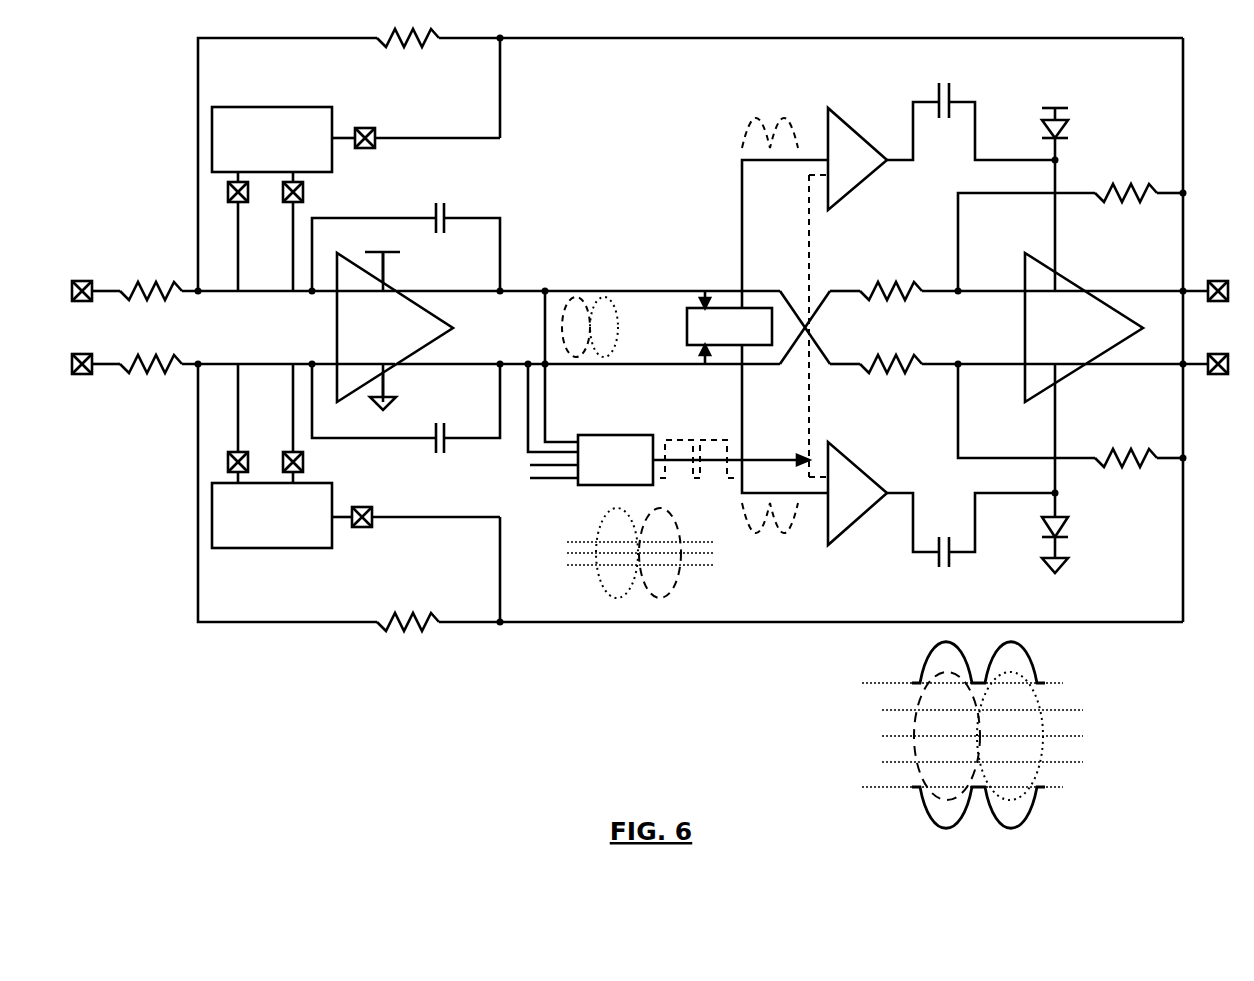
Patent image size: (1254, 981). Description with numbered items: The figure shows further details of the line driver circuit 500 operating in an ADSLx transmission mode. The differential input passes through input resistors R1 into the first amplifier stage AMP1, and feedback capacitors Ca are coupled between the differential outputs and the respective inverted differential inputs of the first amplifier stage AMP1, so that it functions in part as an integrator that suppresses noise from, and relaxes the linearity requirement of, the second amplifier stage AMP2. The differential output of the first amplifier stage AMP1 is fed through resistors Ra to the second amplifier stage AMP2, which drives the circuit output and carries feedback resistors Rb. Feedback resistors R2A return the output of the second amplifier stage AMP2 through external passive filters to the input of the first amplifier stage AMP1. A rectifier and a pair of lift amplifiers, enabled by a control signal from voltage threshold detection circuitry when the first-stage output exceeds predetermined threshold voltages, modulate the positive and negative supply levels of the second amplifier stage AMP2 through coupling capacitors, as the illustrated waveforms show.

The line driver circuit 500 is at (127, 48).
The resistor R1 is at (151, 327).
The feedback resistor R2A is at (408, 330).
The feedback capacitor Ca is at (406, 328).
The resistor Ra is at (891, 327).
The feedback resistor Rb is at (1070, 325).
The first amplifier stage AMP1 is at (395, 327).
The second amplifier stage AMP2 is at (1084, 327).